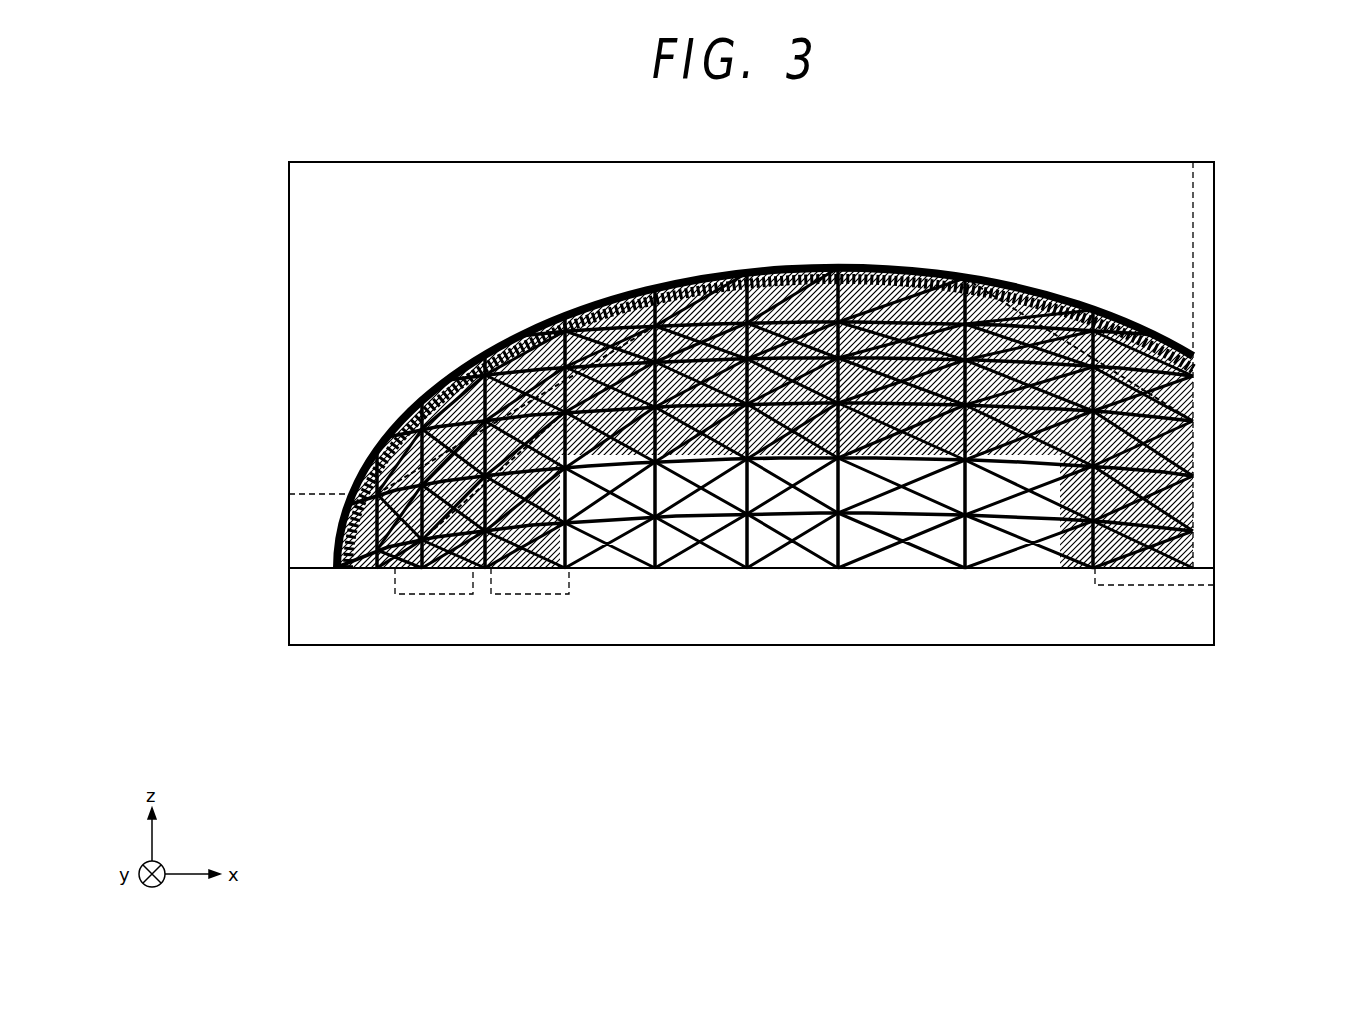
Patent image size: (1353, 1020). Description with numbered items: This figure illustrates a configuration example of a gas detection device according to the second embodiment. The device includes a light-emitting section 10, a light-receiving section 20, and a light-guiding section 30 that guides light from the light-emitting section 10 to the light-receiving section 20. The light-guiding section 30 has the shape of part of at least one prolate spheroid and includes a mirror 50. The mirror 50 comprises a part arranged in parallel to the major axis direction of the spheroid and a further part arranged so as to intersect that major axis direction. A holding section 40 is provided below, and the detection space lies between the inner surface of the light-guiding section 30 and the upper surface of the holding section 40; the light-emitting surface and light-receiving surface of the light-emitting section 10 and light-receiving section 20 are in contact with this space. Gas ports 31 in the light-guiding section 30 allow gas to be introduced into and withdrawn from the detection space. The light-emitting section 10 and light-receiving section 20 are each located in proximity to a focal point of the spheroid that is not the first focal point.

The light-emitting section 10 is at (535, 594).
The light-receiving section 20 is at (433, 594).
The light-guiding section 30 is at (777, 268).
The gas ports 31 is at (313, 492).
The holding section 40 is at (750, 645).
The mirror 50 is at (1153, 585).